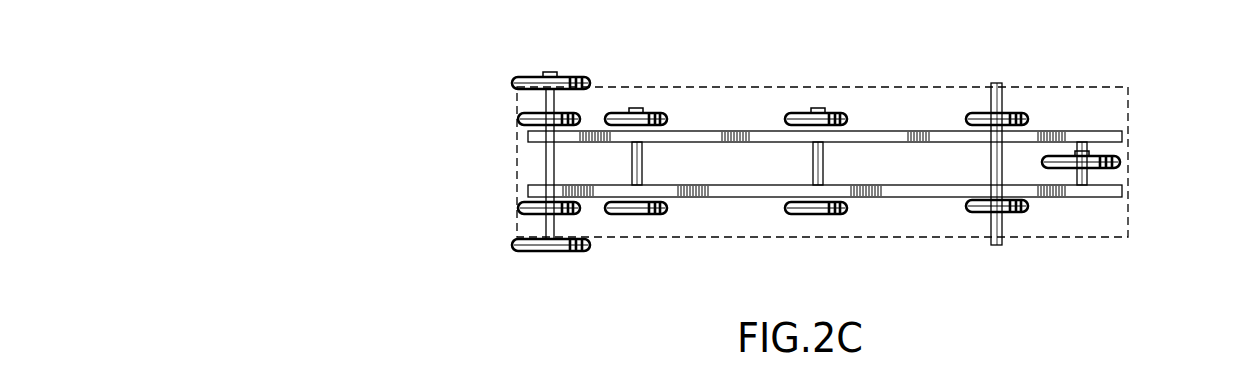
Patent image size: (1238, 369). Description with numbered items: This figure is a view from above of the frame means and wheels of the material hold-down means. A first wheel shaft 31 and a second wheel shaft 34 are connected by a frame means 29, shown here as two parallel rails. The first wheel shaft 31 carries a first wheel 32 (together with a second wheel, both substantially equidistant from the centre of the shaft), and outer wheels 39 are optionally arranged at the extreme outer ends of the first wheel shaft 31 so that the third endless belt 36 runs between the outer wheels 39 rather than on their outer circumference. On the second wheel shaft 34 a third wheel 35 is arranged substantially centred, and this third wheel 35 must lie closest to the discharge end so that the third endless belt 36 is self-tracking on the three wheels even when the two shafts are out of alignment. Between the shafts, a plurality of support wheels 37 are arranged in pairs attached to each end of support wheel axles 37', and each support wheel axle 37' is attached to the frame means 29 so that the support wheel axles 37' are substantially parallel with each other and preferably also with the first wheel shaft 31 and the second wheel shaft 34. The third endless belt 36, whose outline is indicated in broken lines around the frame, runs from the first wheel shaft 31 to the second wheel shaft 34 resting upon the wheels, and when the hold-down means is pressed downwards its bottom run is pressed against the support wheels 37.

The frame means 29 is at (530, 137).
The first wheel shaft 31 is at (550, 75).
The first wheel 32 is at (518, 117).
The second wheel shaft 34 is at (1087, 148).
The third wheel 35 is at (1122, 162).
The third endless belt 36 is at (743, 86).
The support wheels 37 is at (816, 165).
The support wheel axles 37' is at (817, 164).
The outer wheels 39 is at (512, 78).